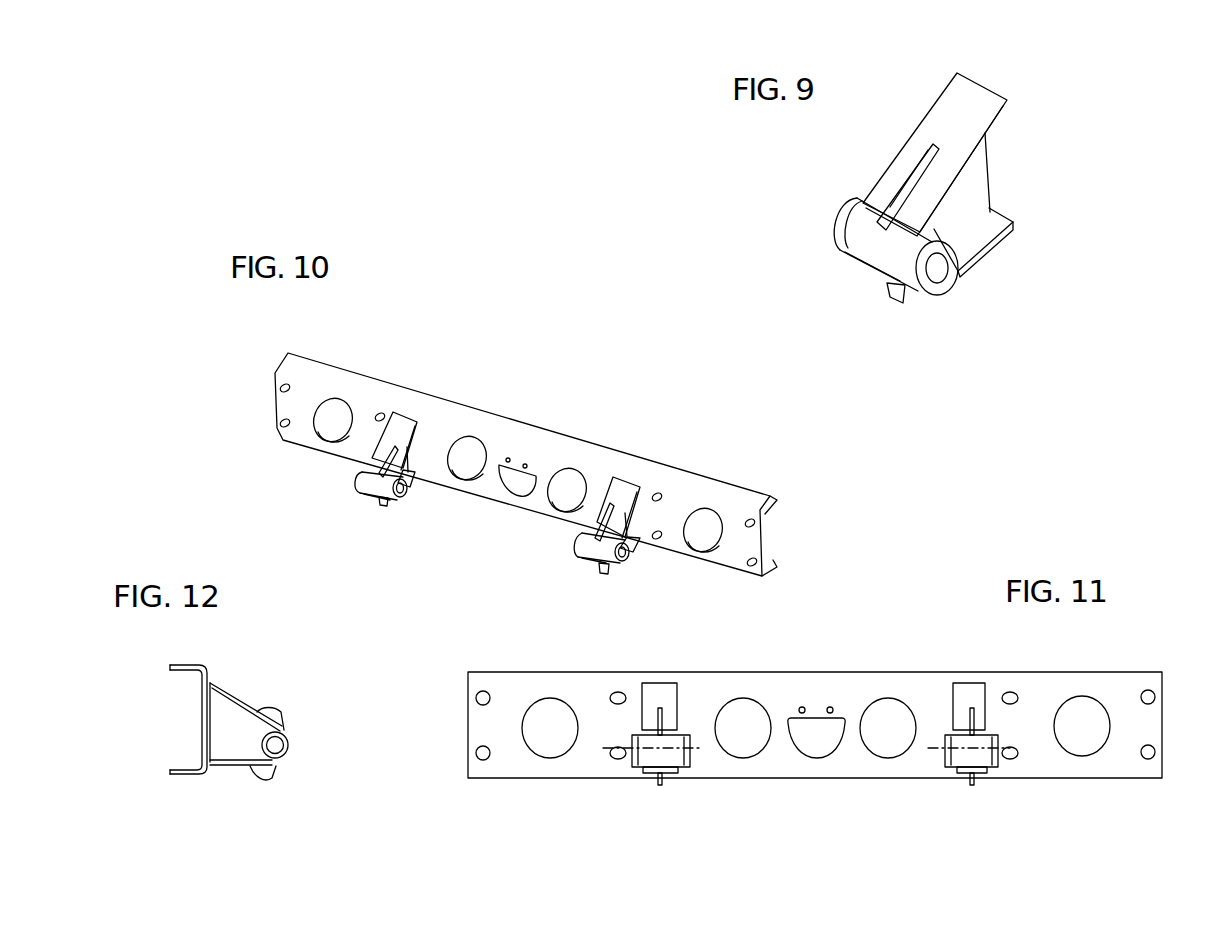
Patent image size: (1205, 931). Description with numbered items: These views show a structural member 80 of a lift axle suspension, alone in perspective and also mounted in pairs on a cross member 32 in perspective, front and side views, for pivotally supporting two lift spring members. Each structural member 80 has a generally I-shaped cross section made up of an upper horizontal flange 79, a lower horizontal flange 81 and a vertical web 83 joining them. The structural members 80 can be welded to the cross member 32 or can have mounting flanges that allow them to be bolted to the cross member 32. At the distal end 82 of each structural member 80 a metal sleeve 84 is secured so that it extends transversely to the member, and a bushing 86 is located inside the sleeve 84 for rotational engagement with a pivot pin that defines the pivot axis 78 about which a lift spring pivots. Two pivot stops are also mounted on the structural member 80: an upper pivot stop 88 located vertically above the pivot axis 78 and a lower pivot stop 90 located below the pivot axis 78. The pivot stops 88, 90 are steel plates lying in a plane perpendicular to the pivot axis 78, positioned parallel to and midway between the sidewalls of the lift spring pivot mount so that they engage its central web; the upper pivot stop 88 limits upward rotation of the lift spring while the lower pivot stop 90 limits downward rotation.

In FIG. 10, the cross member 32 is at (510, 432).
In FIG. 11, the cross member 32 is at (833, 688).
In FIG. 12, the cross member 32 is at (182, 665).
In FIG. 11, the pivot axis 78 is at (613, 748).
In FIG. 9, the upper horizontal flange 79 is at (947, 103).
In FIG. 10, the upper horizontal flange 79 is at (388, 438).
In FIG. 11, the upper horizontal flange 79 is at (672, 700).
In FIG. 12, the upper horizontal flange 79 is at (230, 692).
In FIG. 9, the structural member 80 is at (935, 227).
In FIG. 10, the structural member 80 is at (501, 472).
In FIG. 11, the structural member 80 is at (811, 737).
In FIG. 9, the lower horizontal flange 81 is at (990, 228).
In FIG. 10, the lower horizontal flange 81 is at (413, 480).
In FIG. 11, the lower horizontal flange 81 is at (673, 772).
In FIG. 12, the lower horizontal flange 81 is at (223, 763).
In FIG. 9, the distal end 82 is at (867, 273).
In FIG. 10, the distal end 82 is at (368, 498).
In FIG. 12, the distal end 82 is at (292, 745).
In FIG. 9, the vertical web 83 is at (980, 177).
In FIG. 10, the vertical web 83 is at (405, 462).
In FIG. 12, the vertical web 83 is at (227, 725).
In FIG. 9, the metal sleeve 84 is at (868, 254).
In FIG. 10, the metal sleeve 84 is at (363, 493).
In FIG. 11, the metal sleeve 84 is at (677, 753).
In FIG. 12, the metal sleeve 84 is at (290, 735).
In FIG. 9, the bushing 86 is at (930, 293).
In FIG. 9, the upper pivot stop 88 is at (887, 202).
In FIG. 10, the upper pivot stop 88 is at (370, 466).
In FIG. 11, the upper pivot stop 88 is at (656, 720).
In FIG. 12, the upper pivot stop 88 is at (275, 708).
In FIG. 9, the lower pivot stop 90 is at (903, 304).
In FIG. 10, the lower pivot stop 90 is at (387, 505).
In FIG. 11, the lower pivot stop 90 is at (656, 783).
In FIG. 12, the lower pivot stop 90 is at (263, 778).